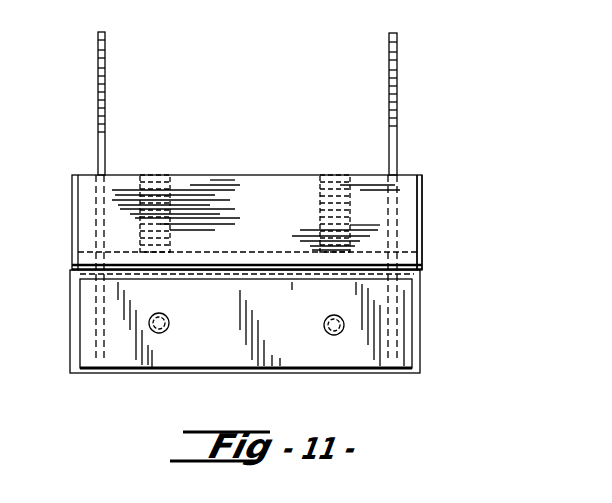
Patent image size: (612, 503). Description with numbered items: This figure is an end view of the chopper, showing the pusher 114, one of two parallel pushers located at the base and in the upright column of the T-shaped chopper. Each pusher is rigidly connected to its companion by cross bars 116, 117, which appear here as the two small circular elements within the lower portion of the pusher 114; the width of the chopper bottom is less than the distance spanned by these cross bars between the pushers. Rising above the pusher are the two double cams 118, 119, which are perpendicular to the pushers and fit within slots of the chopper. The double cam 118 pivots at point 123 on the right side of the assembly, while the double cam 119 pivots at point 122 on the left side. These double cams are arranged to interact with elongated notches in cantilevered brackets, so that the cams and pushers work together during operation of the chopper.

The pusher 114 is at (222, 360).
The cross bar 116 is at (165, 319).
The cross bar 117 is at (337, 317).
The double cam 118 is at (389, 57).
The double cam 119 is at (105, 56).
The pivot point 122 is at (72, 262).
The pivot point 123 is at (420, 263).